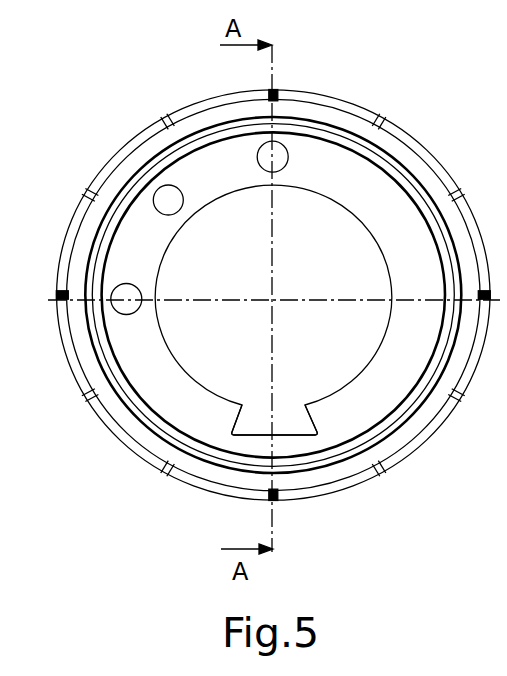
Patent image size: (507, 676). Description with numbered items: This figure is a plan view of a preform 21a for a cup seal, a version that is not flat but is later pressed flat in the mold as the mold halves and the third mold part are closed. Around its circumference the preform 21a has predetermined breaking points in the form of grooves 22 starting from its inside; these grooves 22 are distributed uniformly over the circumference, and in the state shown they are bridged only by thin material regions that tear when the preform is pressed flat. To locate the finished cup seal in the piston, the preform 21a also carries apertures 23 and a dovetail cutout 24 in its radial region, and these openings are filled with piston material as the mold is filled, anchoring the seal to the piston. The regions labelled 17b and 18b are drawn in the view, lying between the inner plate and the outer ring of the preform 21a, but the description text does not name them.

The preform 21a is at (358, 75).
The plate portion 17b is at (382, 187).
The annular wall portion 18b is at (438, 187).
The grooves 22 is at (447, 397).
The apertures 23 is at (157, 188).
The dovetail cutouts 24 is at (252, 422).